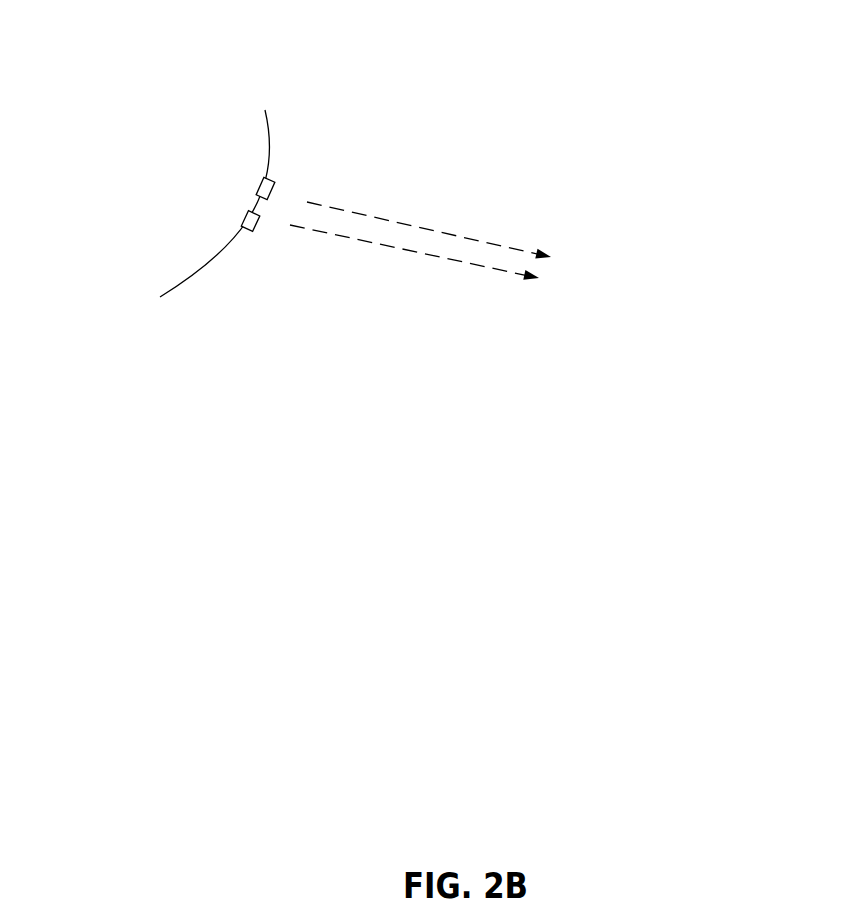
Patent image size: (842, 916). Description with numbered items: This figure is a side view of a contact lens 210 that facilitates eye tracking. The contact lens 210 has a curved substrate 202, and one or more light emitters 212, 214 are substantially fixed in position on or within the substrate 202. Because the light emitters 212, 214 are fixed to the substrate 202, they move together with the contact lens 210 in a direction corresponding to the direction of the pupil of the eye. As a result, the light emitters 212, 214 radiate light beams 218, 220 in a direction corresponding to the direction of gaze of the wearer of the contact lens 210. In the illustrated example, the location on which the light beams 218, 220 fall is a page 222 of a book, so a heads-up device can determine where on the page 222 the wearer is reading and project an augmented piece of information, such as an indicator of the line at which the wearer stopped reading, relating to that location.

The contact lens 210 is at (190, 67).
The substrate 202 is at (168, 306).
The light emitter 212 is at (274, 181).
The light emitter 214 is at (252, 232).
The light beam 218 is at (379, 199).
The light beam 220 is at (392, 262).
The page 222 is at (671, 167).